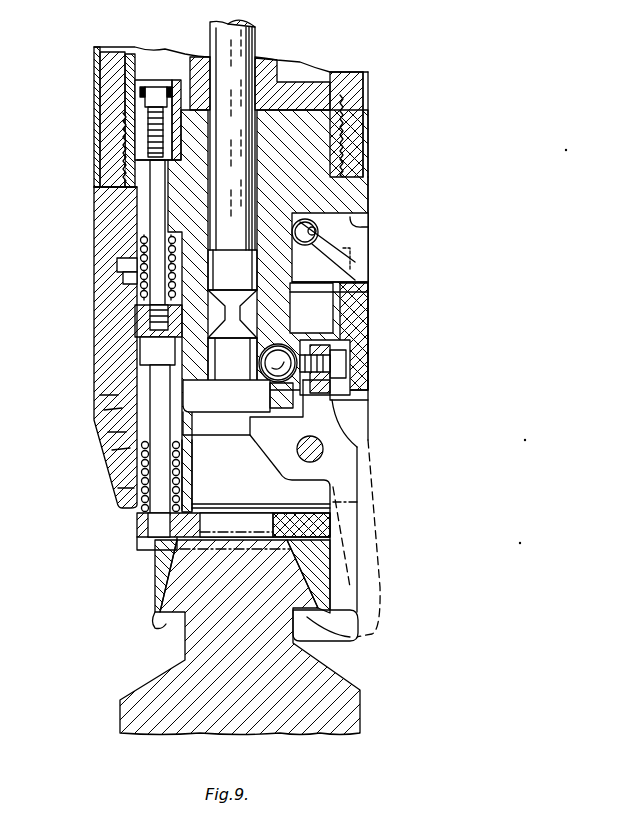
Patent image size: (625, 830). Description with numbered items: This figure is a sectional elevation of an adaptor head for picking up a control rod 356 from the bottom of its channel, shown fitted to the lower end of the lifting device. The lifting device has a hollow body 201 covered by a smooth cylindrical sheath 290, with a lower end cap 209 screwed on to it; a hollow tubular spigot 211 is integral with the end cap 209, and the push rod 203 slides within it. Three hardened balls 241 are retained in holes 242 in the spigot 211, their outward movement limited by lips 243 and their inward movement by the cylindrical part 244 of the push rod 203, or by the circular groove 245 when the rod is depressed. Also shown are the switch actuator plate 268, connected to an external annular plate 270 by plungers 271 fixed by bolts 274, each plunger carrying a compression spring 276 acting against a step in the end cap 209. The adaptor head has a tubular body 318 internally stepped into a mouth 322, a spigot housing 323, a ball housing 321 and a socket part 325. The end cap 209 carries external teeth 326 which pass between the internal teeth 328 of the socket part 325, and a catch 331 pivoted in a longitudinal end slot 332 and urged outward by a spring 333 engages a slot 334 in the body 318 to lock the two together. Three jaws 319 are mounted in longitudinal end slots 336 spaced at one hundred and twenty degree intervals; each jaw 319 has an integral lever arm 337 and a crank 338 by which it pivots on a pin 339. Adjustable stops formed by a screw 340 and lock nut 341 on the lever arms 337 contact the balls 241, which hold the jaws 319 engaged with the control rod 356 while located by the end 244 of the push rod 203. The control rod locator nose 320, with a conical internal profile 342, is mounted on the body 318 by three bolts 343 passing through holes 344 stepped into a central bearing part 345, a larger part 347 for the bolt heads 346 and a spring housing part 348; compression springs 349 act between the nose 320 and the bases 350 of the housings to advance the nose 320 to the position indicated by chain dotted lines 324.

The body 201 is at (360, 92).
The push rod 203 is at (257, 38).
The end cap 209 is at (369, 186).
The spigot 211 is at (330, 247).
The balls 241 is at (243, 407).
The holes 242 is at (332, 317).
The lips 243 is at (278, 455).
The cylindrical part 244 is at (226, 396).
The circular groove 245 is at (135, 327).
The switch actuator plate 268 is at (278, 61).
The external annular plate 270 is at (337, 300).
The plungers 271 is at (160, 196).
The bolts 274 is at (158, 86).
The compression spring 276 is at (120, 228).
The sheath 290 is at (370, 148).
The tubular body 318 is at (103, 374).
The jaws 319 is at (347, 452).
The control rod locator nose 320 is at (137, 528).
The ball housing 321 is at (300, 346).
The mouth 322 is at (262, 489).
The spigot housing 323 is at (183, 452).
The chain dotted lines 324 is at (178, 628).
The socket part 325 is at (368, 290).
The external teeth 326 is at (123, 279).
The internal teeth 328 is at (117, 264).
The catch 331 is at (350, 260).
The longitudinal end slot 332 is at (362, 240).
The spring 333 is at (355, 224).
The slot 334 is at (362, 268).
The longitudinal end slots 336 is at (323, 412).
The lever arm 337 is at (350, 430).
The crank 338 is at (224, 475).
The pin 339 is at (323, 452).
The screw 340 is at (345, 363).
The lock nut 341 is at (347, 375).
The conical internal profile 342 is at (157, 572).
The bolts 343 is at (120, 433).
The holes 344 is at (120, 407).
The central bearing part 345 is at (127, 443).
The heads 346 is at (140, 352).
The part of larger diameter 347 is at (103, 395).
The spring housing part 348 is at (132, 480).
The compression springs 349 is at (182, 470).
The bases 350 is at (128, 466).
The control rod 356 is at (153, 606).